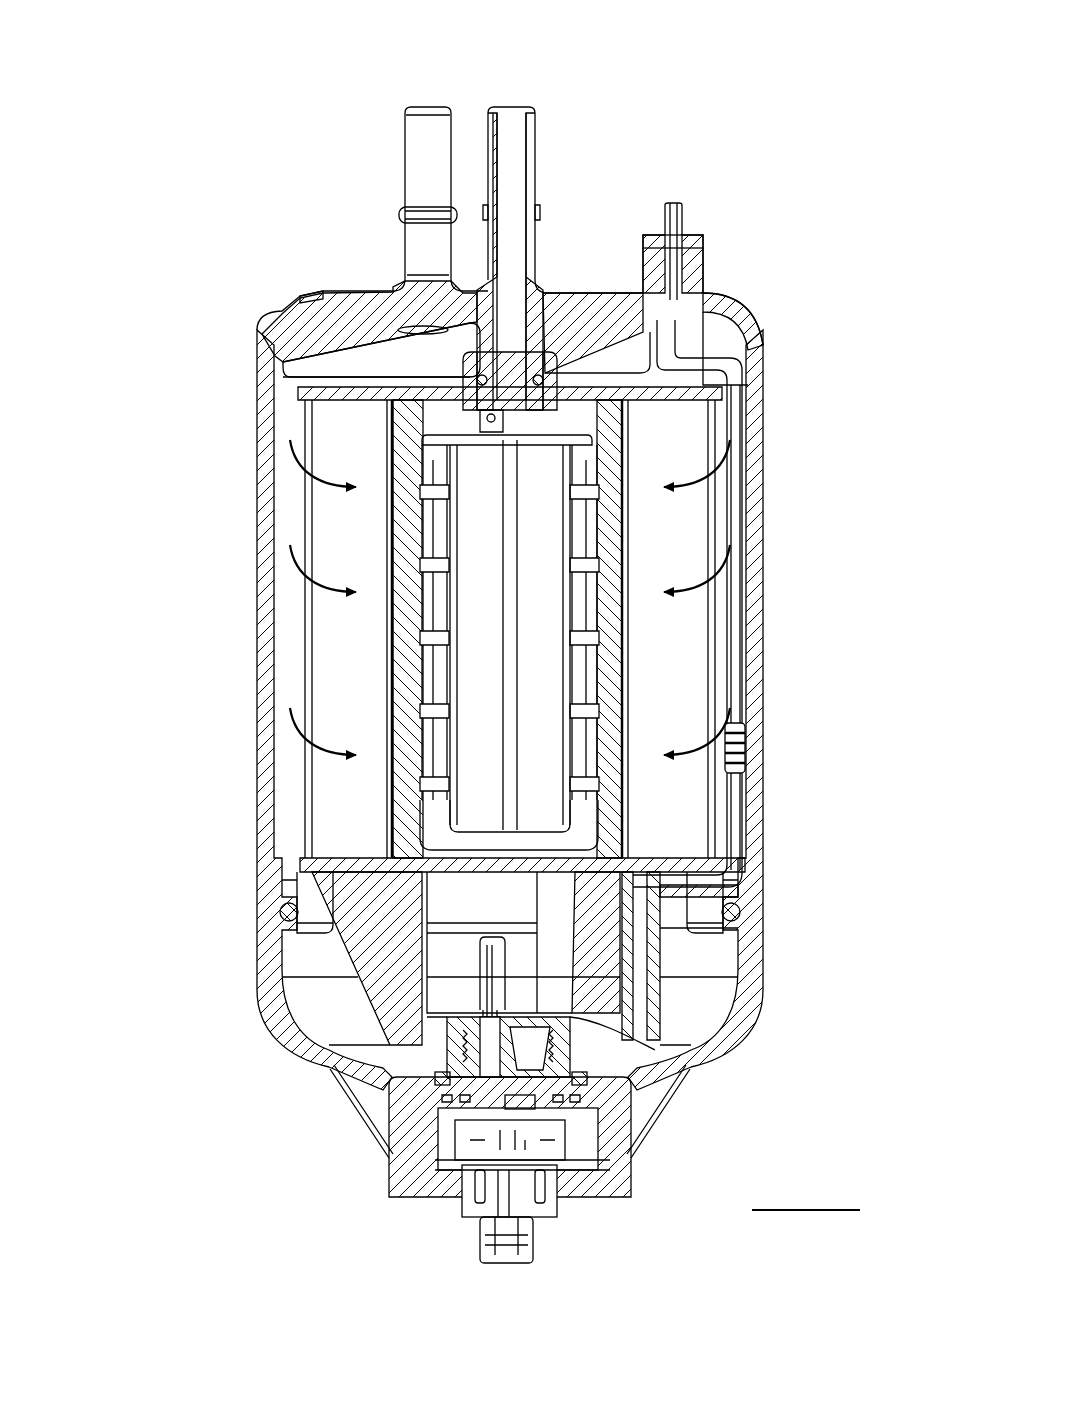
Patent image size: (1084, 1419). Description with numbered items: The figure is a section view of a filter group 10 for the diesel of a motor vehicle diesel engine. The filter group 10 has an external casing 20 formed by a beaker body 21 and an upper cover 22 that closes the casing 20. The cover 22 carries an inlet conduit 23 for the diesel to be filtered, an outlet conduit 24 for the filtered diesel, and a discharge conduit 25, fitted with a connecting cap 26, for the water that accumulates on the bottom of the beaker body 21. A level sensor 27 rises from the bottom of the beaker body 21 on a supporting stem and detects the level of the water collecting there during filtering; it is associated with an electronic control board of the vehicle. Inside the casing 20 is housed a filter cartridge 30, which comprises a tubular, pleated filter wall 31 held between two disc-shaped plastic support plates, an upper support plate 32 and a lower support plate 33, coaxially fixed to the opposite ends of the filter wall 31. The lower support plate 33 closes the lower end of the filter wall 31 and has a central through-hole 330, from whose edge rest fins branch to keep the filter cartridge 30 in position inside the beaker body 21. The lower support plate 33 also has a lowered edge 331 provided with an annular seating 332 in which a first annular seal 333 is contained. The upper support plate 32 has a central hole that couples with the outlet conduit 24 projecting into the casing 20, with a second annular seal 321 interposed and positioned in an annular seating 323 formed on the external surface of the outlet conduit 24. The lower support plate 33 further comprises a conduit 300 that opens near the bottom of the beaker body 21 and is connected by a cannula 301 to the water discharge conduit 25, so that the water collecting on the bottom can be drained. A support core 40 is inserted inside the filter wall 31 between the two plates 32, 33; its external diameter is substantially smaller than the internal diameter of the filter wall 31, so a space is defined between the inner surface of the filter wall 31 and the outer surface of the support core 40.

The filter group 10 is at (265, 160).
The external casing 20 is at (257, 530).
The beaker body 21 is at (265, 692).
The upper cover 22 is at (272, 314).
The inlet conduit 23 is at (405, 180).
The outlet conduit 24 is at (535, 165).
The discharge conduit 25 is at (705, 280).
The connecting cap 26 is at (688, 225).
The level sensor 27 is at (483, 953).
The filter cartridge 30 is at (300, 622).
The tubular filter wall 31 is at (368, 689).
The upper support plate 32 is at (293, 388).
The lower support plate 33 is at (293, 860).
The support core 40 is at (630, 548).
The conduit 300 is at (643, 953).
The cannula 301 is at (735, 665).
The second annular seal 321 is at (570, 367).
The annular seating 323 is at (400, 380).
The central hole 330 is at (444, 860).
The lowered edge 331 is at (330, 927).
The annular seating 332 is at (287, 923).
The first annular seal 333 is at (280, 920).